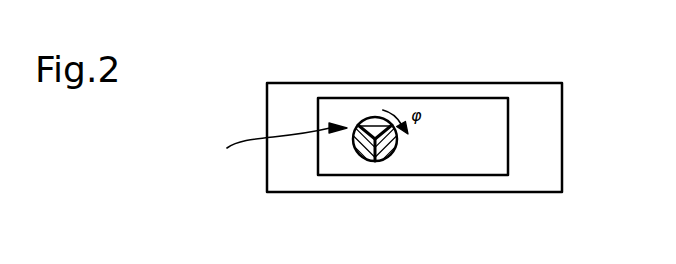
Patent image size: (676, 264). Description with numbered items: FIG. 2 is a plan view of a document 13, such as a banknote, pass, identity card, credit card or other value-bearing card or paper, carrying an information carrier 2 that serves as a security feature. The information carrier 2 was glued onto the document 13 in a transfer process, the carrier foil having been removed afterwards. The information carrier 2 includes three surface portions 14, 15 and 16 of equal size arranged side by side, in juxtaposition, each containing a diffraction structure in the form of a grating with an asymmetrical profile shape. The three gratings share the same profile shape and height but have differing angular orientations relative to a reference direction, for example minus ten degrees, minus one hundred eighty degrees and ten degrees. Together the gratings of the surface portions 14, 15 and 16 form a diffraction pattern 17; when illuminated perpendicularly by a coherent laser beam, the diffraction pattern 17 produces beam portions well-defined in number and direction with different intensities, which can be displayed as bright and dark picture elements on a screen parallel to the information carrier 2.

The information carrier 2 is at (482, 105).
The document 13 is at (548, 93).
The surface portion 14 is at (358, 153).
The surface portion 15 is at (395, 152).
The surface portion 16 is at (371, 116).
The diffraction pattern 17 is at (272, 143).